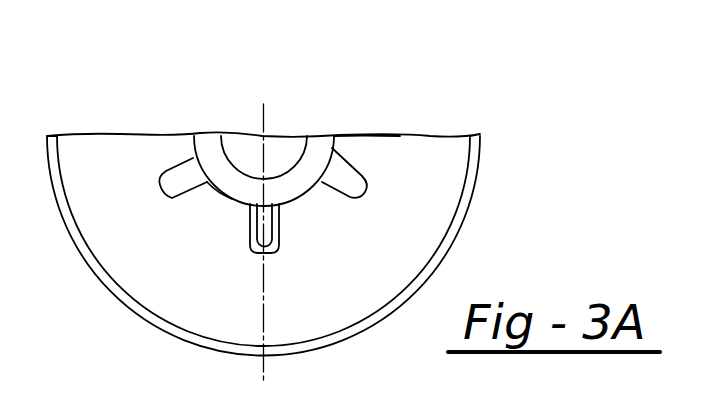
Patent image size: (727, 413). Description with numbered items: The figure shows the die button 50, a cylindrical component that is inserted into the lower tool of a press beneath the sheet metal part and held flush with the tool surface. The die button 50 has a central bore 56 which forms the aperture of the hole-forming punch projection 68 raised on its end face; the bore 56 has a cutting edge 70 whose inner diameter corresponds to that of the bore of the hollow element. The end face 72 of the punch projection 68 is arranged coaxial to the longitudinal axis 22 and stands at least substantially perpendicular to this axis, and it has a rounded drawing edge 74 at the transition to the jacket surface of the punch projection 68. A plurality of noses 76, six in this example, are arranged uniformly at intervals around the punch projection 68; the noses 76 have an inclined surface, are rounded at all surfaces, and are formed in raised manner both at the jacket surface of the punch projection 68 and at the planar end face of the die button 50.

The longitudinal axis 22 is at (262, 120).
The die button 50 is at (70, 204).
The central bore 56 is at (283, 150).
The hole-forming punch projection 68 is at (298, 200).
The cutting edge 70 is at (245, 146).
The end face 72 is at (321, 146).
The rounded drawing edge 74 is at (212, 188).
The noses 76 is at (157, 198).